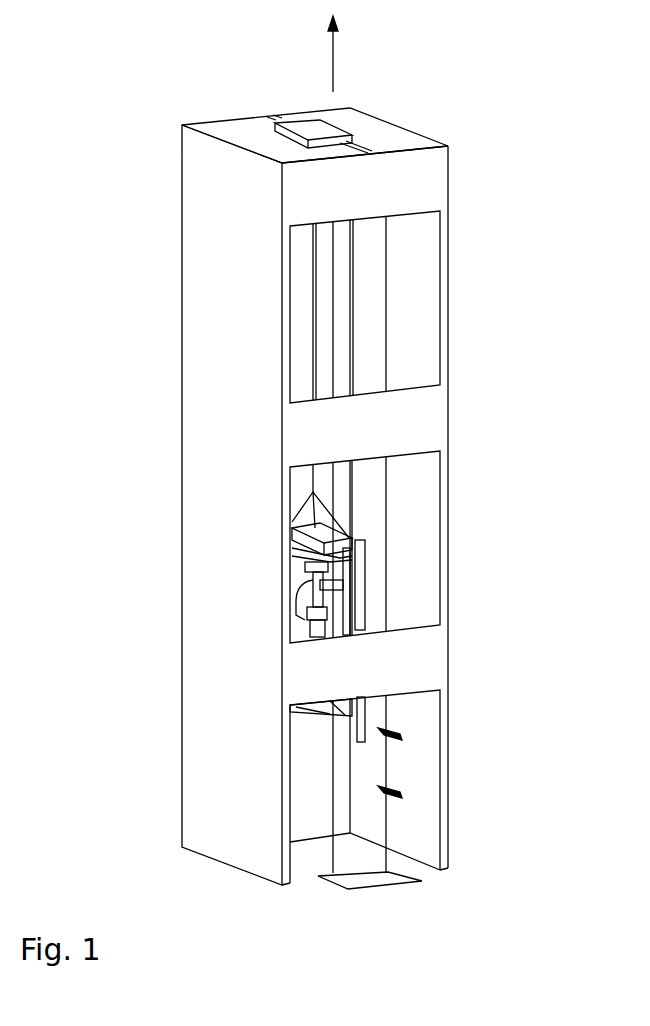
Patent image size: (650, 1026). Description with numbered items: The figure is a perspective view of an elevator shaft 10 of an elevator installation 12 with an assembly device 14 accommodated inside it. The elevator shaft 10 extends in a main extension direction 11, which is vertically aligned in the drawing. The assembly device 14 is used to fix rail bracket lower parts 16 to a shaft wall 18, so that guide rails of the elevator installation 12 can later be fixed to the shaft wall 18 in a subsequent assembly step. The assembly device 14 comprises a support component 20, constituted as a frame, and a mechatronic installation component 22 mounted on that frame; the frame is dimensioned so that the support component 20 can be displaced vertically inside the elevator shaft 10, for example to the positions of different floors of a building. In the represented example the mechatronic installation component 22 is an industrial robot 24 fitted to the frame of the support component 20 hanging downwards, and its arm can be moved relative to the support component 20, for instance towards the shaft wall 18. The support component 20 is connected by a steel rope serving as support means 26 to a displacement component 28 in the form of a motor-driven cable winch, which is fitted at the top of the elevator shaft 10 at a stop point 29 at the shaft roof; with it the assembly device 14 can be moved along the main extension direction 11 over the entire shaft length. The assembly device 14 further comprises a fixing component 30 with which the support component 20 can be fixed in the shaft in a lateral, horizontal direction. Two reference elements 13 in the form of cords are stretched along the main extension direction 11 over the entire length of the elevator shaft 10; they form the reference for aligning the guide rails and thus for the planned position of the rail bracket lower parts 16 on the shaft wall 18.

The elevator shaft 10 is at (410, 510).
The main extension direction 11 is at (337, 38).
The elevator installation 12 is at (470, 279).
The reference elements 13 is at (332, 852).
The assembly device 14 is at (384, 587).
The rail bracket lower parts 16 is at (402, 737).
The shaft wall 18 is at (422, 337).
The support component 20 is at (287, 553).
The mechatronic installation component 22 is at (294, 593).
The industrial robot 24 is at (305, 629).
The support means 26 is at (310, 338).
The displacement component 28 is at (307, 127).
The stop point 29 is at (366, 137).
The fixing component 30 is at (368, 722).